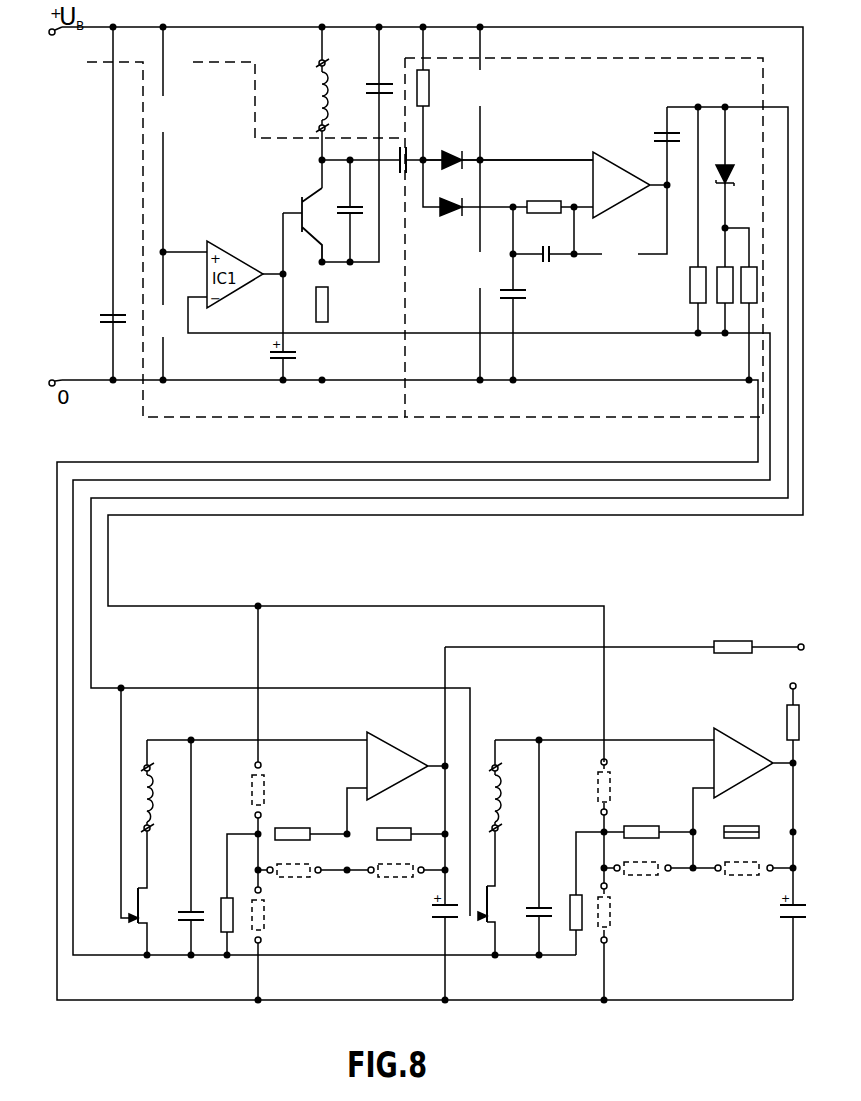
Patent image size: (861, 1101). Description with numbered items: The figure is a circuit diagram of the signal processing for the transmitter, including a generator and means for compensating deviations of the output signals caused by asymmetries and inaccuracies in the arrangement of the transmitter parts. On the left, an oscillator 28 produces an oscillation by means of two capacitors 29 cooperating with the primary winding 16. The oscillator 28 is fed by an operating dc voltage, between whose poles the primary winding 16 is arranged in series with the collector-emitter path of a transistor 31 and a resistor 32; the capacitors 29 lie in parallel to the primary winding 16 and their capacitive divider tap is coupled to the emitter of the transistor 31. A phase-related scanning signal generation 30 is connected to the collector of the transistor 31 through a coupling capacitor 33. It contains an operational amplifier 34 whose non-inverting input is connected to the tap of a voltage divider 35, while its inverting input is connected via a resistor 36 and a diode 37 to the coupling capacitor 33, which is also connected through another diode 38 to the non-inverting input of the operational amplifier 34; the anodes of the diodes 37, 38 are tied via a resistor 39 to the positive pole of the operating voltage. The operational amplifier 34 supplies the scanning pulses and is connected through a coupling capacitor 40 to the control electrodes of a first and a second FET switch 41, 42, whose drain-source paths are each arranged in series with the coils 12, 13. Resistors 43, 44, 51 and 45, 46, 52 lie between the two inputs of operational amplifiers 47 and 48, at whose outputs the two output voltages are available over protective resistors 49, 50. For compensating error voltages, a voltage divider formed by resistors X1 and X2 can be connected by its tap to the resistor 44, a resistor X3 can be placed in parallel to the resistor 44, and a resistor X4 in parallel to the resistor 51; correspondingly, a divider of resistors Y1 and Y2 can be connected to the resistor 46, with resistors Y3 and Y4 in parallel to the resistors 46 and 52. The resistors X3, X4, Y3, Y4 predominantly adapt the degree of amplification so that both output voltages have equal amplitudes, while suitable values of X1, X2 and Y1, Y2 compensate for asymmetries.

The coil 12 is at (151, 799).
The coil 13 is at (499, 799).
The primary winding 16 is at (316, 100).
The oscillator 28 is at (239, 411).
The capacitors 29 is at (372, 84).
The scanning signal generation 30 is at (572, 411).
The transistor 31 is at (300, 203).
The resistor 32 is at (328, 305).
The coupling capacitor 33 is at (400, 172).
The operational amplifier 34 is at (608, 160).
The voltage divider 35 is at (501, 136).
The resistor 36 is at (544, 201).
The diode 37 is at (452, 216).
The diode 38 is at (452, 152).
The resistor 39 is at (429, 94).
The coupling capacitor 40 is at (661, 133).
The first FET switch 41 is at (145, 903).
The second FET switch 42 is at (494, 900).
The resistor 43 is at (222, 900).
The resistor 44 is at (292, 828).
The resistor 45 is at (570, 900).
The resistor 46 is at (642, 826).
The operational amplifier 47 is at (392, 752).
The operational amplifier 48 is at (729, 740).
The protective resistor 49 is at (732, 641).
The protective resistor 50 is at (786, 720).
The resistor 51 is at (394, 828).
The resistor 52 is at (742, 826).
The resistor X1 is at (251, 790).
The resistor X2 is at (266, 922).
The resistor X3 is at (292, 878).
The resistor X4 is at (400, 878).
The resistor Y1 is at (612, 786).
The resistor Y2 is at (611, 923).
The resistor Y3 is at (640, 876).
The resistor Y4 is at (743, 876).